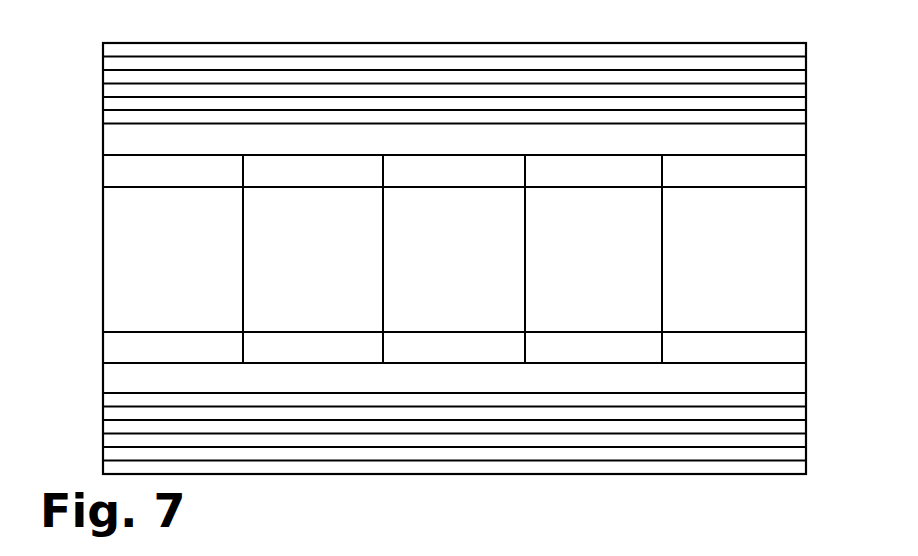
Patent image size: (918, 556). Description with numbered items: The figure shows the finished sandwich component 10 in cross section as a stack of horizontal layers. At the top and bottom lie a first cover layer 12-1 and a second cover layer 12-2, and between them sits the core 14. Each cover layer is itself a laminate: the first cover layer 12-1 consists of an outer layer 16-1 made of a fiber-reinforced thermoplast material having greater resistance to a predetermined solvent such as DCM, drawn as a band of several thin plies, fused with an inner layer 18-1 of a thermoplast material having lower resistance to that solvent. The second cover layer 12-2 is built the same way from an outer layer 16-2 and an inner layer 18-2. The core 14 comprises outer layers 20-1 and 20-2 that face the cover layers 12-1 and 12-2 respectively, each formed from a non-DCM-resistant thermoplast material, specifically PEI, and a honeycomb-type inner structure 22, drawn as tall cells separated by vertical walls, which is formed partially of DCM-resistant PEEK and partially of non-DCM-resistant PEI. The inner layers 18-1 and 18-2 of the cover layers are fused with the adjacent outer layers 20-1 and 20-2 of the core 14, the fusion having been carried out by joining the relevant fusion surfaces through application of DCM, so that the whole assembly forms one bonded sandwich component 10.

The sandwich component 10 is at (486, 38).
The first cover layer 12-1 is at (813, 43).
The second cover layer 12-2 is at (813, 363).
The core 14 is at (813, 155).
The outer layer 16-1 is at (97, 43).
The outer layer 16-2 is at (97, 393).
The inner layer 18-1 is at (97, 124).
The inner layer 18-2 is at (97, 363).
The outer layer of the core 20-1 is at (97, 155).
The outer layer of the core 20-2 is at (97, 332).
The honeycomb-type inner structure 22 is at (97, 187).